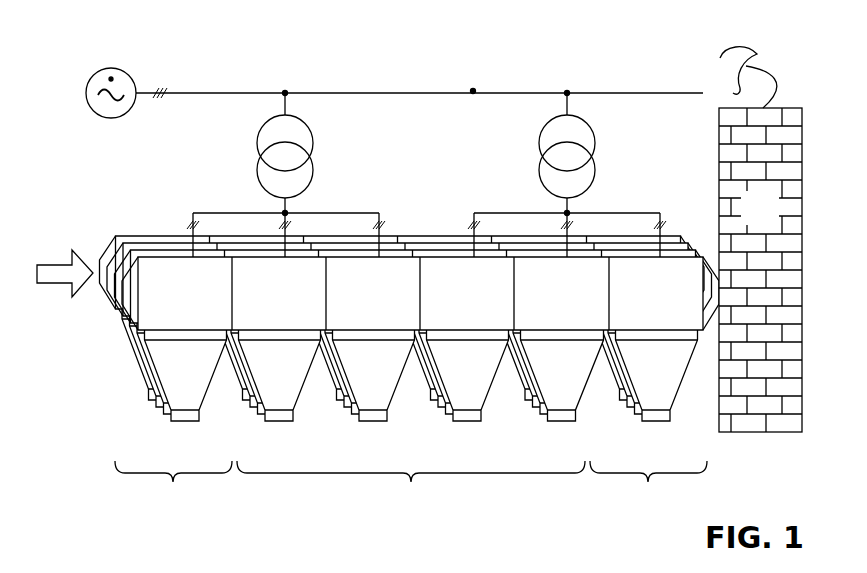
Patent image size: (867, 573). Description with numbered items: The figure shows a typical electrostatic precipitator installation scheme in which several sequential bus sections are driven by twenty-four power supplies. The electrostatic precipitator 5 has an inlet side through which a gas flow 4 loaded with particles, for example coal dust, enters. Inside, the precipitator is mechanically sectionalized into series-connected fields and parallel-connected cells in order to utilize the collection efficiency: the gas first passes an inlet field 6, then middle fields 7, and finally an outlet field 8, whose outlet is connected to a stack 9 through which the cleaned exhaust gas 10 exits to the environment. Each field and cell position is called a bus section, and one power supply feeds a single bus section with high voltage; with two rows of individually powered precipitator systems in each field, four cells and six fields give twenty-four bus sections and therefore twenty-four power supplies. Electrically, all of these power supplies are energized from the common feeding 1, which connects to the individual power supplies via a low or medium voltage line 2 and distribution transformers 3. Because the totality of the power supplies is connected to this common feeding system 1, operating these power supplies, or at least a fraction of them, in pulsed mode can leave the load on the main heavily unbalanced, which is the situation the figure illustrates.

The common feeding 1 is at (111, 61).
The low or medium voltage line 2 is at (419, 51).
The distribution transformer 3 is at (297, 130).
The gas flow 4 is at (65, 264).
The electrostatic precipitator 5 is at (125, 362).
The inlet field 6 is at (173, 489).
The middle fields 7 is at (411, 489).
The outlet field 8 is at (648, 489).
The stack 9 is at (752, 221).
The cleaned exhaust gas 10 is at (748, 48).